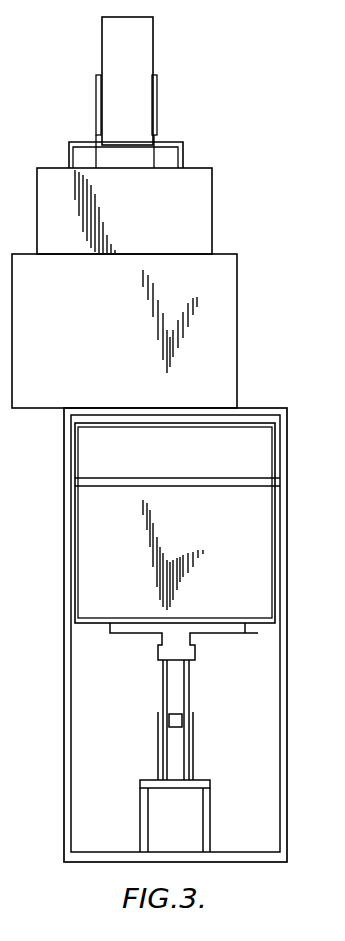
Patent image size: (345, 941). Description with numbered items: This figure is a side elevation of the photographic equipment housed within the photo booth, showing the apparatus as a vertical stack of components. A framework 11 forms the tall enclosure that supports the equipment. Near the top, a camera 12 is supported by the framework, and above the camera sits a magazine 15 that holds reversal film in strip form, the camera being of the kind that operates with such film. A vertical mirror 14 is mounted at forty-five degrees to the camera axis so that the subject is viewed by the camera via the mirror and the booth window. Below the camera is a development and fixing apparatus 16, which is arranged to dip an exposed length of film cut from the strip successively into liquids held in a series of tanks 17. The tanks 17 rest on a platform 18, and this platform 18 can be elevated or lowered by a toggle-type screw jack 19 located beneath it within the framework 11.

The framework 11 is at (280, 748).
The camera 12 is at (148, 214).
The vertical mirror 14 is at (172, 161).
The magazine 15 is at (134, 50).
The development and fixing apparatus 16 is at (102, 352).
The tanks 17 is at (209, 531).
The platform 18 is at (258, 633).
The toggle-type screw jack 19 is at (195, 721).